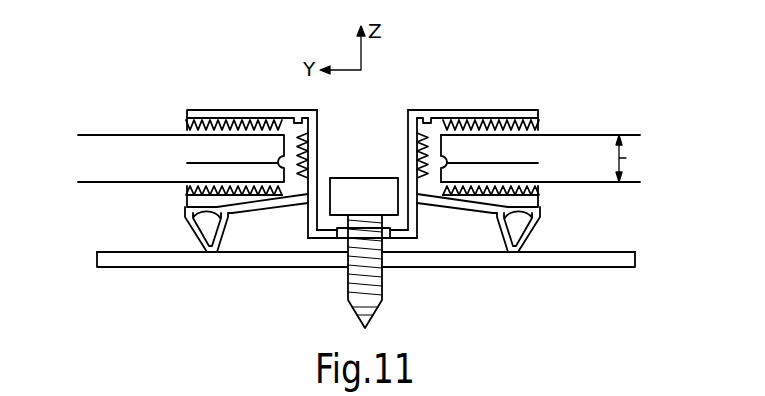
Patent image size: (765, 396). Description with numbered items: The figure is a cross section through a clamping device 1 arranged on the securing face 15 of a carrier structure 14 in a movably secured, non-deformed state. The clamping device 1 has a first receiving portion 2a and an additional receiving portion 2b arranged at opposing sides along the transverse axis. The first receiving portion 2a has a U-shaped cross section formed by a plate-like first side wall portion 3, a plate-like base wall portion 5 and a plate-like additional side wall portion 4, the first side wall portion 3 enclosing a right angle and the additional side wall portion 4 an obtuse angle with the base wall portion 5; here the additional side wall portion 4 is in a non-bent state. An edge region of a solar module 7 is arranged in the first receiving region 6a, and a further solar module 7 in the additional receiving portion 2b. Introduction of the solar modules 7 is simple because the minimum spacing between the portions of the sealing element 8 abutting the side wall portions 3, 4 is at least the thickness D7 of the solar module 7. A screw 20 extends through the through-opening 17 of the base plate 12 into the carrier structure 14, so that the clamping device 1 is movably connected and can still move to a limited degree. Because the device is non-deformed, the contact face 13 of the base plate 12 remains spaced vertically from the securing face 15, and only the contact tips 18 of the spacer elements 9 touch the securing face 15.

The clamping device 1 is at (348, 182).
The first receiving portion 2a is at (484, 182).
The additional receiving portion 2b is at (306, 212).
The first side wall portion 3 is at (512, 110).
The additional side wall portion 4 is at (457, 205).
The base wall portion 5 is at (407, 125).
The first receiving region 6a is at (448, 128).
The solar module 7 is at (117, 135).
The sealing element 8 is at (443, 127).
The spacer element 9 is at (523, 235).
The base plate 12 is at (384, 214).
The contact face 13 is at (398, 240).
The carrier structure 14 is at (366, 260).
The securing face 15 is at (366, 228).
The through-opening 17 is at (342, 238).
The contact tip 18 is at (513, 250).
The screw 20 is at (380, 178).
The thickness of the solar module D7 is at (634, 158).